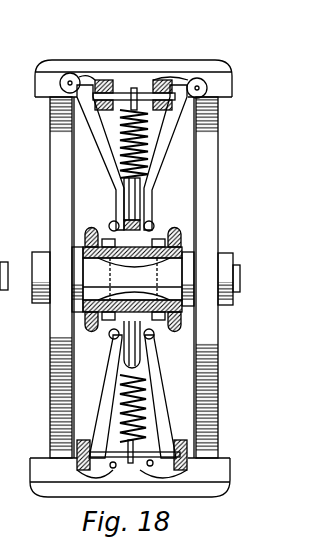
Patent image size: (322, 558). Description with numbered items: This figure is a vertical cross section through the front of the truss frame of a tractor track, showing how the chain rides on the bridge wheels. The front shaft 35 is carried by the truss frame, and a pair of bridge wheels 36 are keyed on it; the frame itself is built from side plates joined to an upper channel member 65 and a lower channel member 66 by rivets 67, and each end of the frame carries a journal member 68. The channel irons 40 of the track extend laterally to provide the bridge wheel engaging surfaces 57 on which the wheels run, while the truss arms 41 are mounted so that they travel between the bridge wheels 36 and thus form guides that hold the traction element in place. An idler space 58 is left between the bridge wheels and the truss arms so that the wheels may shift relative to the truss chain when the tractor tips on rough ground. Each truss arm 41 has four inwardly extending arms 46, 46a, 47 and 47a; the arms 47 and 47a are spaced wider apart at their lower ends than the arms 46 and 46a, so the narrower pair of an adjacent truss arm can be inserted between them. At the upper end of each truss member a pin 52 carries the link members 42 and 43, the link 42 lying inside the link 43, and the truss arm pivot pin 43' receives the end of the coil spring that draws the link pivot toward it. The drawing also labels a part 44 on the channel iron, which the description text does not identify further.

The shaft 35 is at (27, 264).
The bridge wheels 36 is at (53, 356).
The channel irons 40 is at (40, 83).
The truss arm 41 is at (152, 197).
The link member 42 is at (125, 208).
The link member 43 is at (153, 212).
The truss arm pivot pin 43' is at (135, 255).
The cap 44 is at (105, 61).
The inwardly extending arm 46 is at (163, 82).
The inwardly extending arm 46a is at (107, 82).
The inwardly extending arm 47 is at (188, 88).
The inwardly extending arm 47a is at (86, 85).
The pin 52 is at (115, 338).
The bridge wheel engaging surfaces 57 is at (50, 98).
The idler space 58 is at (78, 456).
The upper channel member 65 is at (145, 248).
The lower channel member 66 is at (147, 321).
The rivets 67 is at (87, 231).
The journal member 68 is at (168, 258).